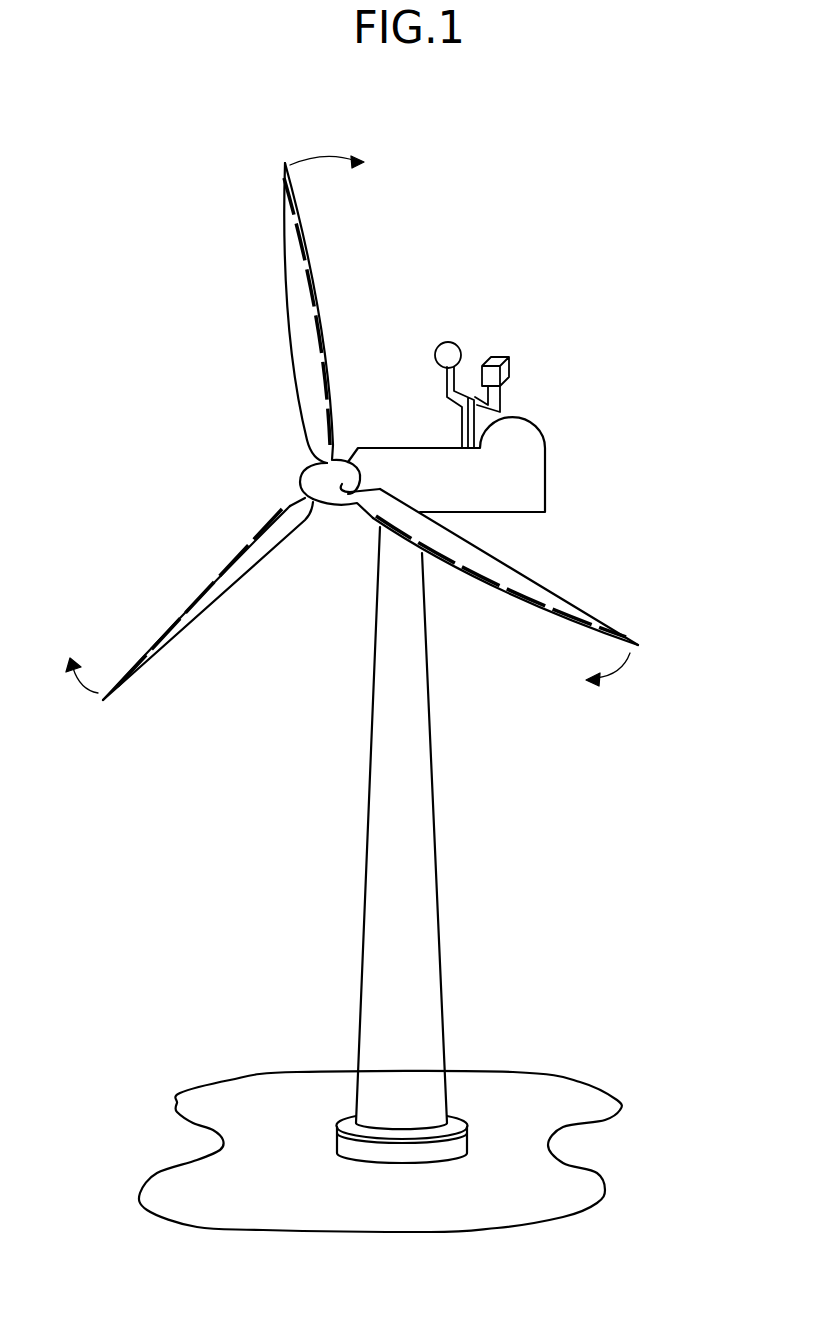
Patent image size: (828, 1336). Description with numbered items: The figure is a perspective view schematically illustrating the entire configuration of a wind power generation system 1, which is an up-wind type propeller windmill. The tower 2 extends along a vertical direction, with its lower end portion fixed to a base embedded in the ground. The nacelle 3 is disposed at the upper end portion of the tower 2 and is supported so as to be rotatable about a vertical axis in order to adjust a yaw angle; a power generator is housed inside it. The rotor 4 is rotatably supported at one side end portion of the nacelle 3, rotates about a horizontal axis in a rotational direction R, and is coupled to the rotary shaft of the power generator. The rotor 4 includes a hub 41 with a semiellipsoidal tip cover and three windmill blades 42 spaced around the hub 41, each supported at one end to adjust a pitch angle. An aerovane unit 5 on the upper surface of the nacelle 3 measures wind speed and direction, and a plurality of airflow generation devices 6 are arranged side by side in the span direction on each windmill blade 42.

The wind power generation system 1 is at (382, 106).
The tower 2 is at (418, 837).
The nacelle 3 is at (525, 487).
The rotor 4 is at (292, 460).
The hub 41 is at (324, 492).
The windmill blade 42 is at (287, 278).
The aerovane unit 5 is at (462, 392).
The airflow generation device 6 is at (296, 193).